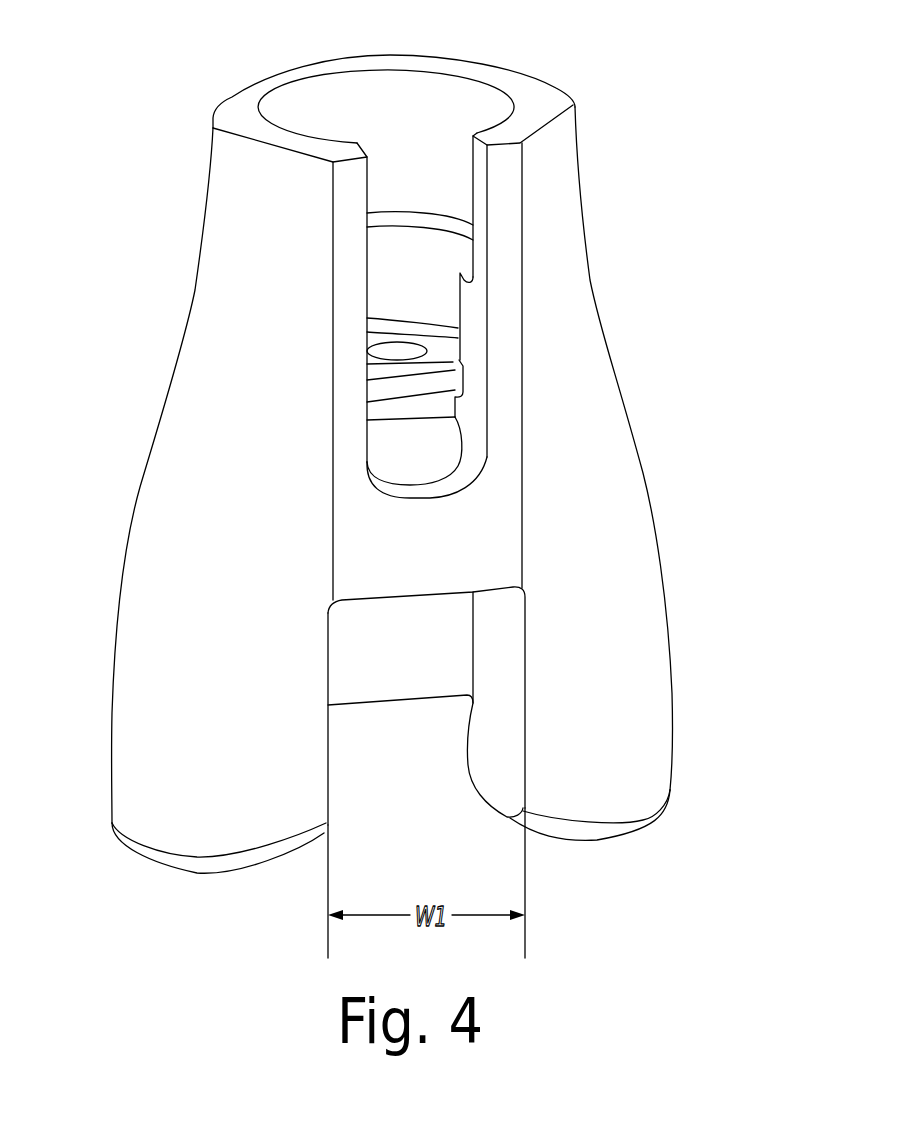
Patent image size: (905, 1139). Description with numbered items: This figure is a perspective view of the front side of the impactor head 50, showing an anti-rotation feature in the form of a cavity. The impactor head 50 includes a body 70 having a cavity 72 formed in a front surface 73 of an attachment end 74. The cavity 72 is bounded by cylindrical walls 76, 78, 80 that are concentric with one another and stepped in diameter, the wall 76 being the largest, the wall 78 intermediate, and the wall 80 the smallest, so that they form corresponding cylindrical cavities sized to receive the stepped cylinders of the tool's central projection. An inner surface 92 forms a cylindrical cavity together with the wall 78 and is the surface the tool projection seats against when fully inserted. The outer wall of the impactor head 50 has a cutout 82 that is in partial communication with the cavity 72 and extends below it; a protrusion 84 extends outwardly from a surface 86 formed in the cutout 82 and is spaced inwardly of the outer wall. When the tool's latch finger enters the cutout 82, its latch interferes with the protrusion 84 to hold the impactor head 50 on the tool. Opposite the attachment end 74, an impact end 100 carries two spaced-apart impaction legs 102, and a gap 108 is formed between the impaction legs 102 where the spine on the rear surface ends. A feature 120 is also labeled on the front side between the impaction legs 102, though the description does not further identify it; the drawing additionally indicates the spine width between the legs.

The impactor head 50 is at (691, 385).
The body 70 is at (628, 473).
The cavity 72 is at (441, 92).
The front surface 73 is at (503, 228).
The attachment end 74 is at (237, 108).
The cylindrical wall 76 is at (488, 100).
The cylindrical wall 78 is at (442, 268).
The cylindrical wall 80 is at (413, 351).
The cutout 82 is at (390, 299).
The protrusion 84 is at (447, 383).
The surface 86 is at (430, 450).
The inner surface 92 is at (413, 348).
The impact end 100 is at (127, 743).
The impaction legs 102 is at (125, 808).
The gap 108 is at (417, 722).
The tab 120 is at (512, 655).